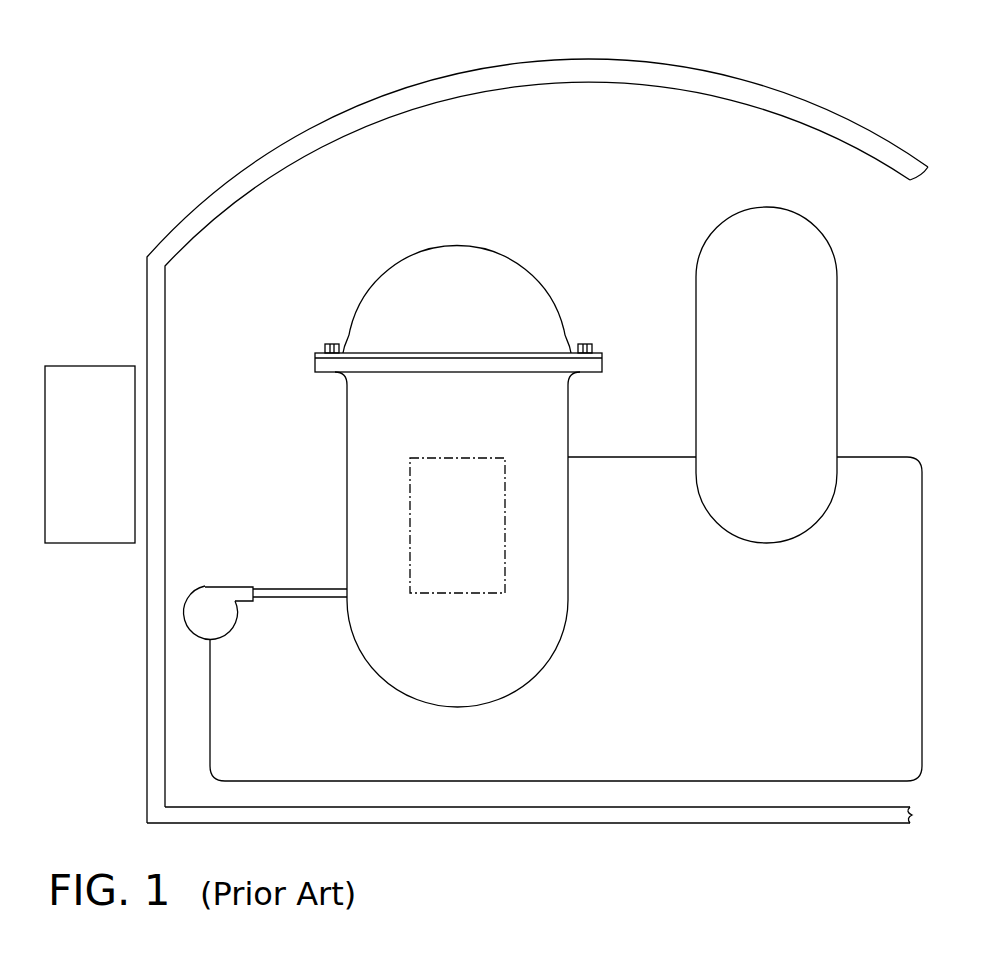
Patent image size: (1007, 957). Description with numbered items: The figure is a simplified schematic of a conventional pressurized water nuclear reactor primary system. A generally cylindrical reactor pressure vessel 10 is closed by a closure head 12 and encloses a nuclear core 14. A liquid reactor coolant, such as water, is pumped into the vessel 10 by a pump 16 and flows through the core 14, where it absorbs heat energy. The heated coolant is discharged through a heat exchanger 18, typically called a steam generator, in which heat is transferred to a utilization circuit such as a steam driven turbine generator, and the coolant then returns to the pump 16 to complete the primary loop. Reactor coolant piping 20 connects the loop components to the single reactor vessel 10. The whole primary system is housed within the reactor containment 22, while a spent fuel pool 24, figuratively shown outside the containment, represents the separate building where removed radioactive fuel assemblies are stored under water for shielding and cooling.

The reactor pressure vessel 10 is at (347, 440).
The closure head 12 is at (355, 297).
The nuclear core 14 is at (410, 513).
The pump 16 is at (205, 585).
The heat exchanger 18 is at (722, 222).
The reactor coolant piping 20 is at (608, 457).
The reactor containment 22 is at (696, 72).
The spent fuel pool 24 is at (62, 366).